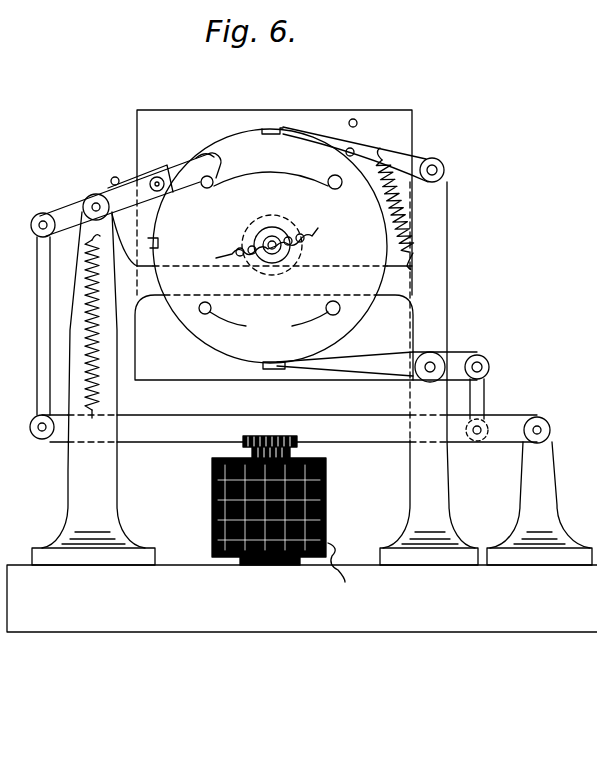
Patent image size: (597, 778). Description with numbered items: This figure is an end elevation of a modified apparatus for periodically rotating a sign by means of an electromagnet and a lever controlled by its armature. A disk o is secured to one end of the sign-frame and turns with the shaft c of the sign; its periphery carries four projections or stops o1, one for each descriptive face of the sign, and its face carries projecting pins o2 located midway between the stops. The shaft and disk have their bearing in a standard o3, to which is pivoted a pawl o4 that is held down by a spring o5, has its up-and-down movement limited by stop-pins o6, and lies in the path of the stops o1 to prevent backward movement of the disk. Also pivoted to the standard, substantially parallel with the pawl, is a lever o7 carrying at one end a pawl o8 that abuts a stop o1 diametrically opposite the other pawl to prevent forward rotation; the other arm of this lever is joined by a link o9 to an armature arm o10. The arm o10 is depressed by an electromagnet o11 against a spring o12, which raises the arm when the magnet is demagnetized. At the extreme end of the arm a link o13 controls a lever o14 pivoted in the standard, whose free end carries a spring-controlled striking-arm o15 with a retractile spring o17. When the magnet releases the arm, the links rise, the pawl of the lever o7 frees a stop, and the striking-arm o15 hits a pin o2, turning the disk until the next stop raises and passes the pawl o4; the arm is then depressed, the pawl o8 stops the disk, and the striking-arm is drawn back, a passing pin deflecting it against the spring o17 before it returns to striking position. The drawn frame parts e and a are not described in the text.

The frame e is at (475, 348).
The armature plate a is at (274, 337).
The disk o is at (270, 246).
The stops o1 is at (272, 127).
The pins o2 is at (270, 242).
The standard o3 is at (436, 322).
The pawl o4 is at (420, 162).
The spring o5 is at (400, 207).
The stop-pins o6 is at (352, 148).
The lever o7 is at (378, 362).
The pawl o8 is at (282, 371).
The link o9 is at (486, 395).
The armature arm o10 is at (296, 429).
The electromagnet o11 is at (327, 493).
The spring o12 is at (90, 355).
The link o13 is at (37, 398).
The lever o14 is at (62, 212).
The striking-arm o15 is at (182, 172).
The retractile spring o17 is at (133, 182).
The shaft c is at (290, 251).